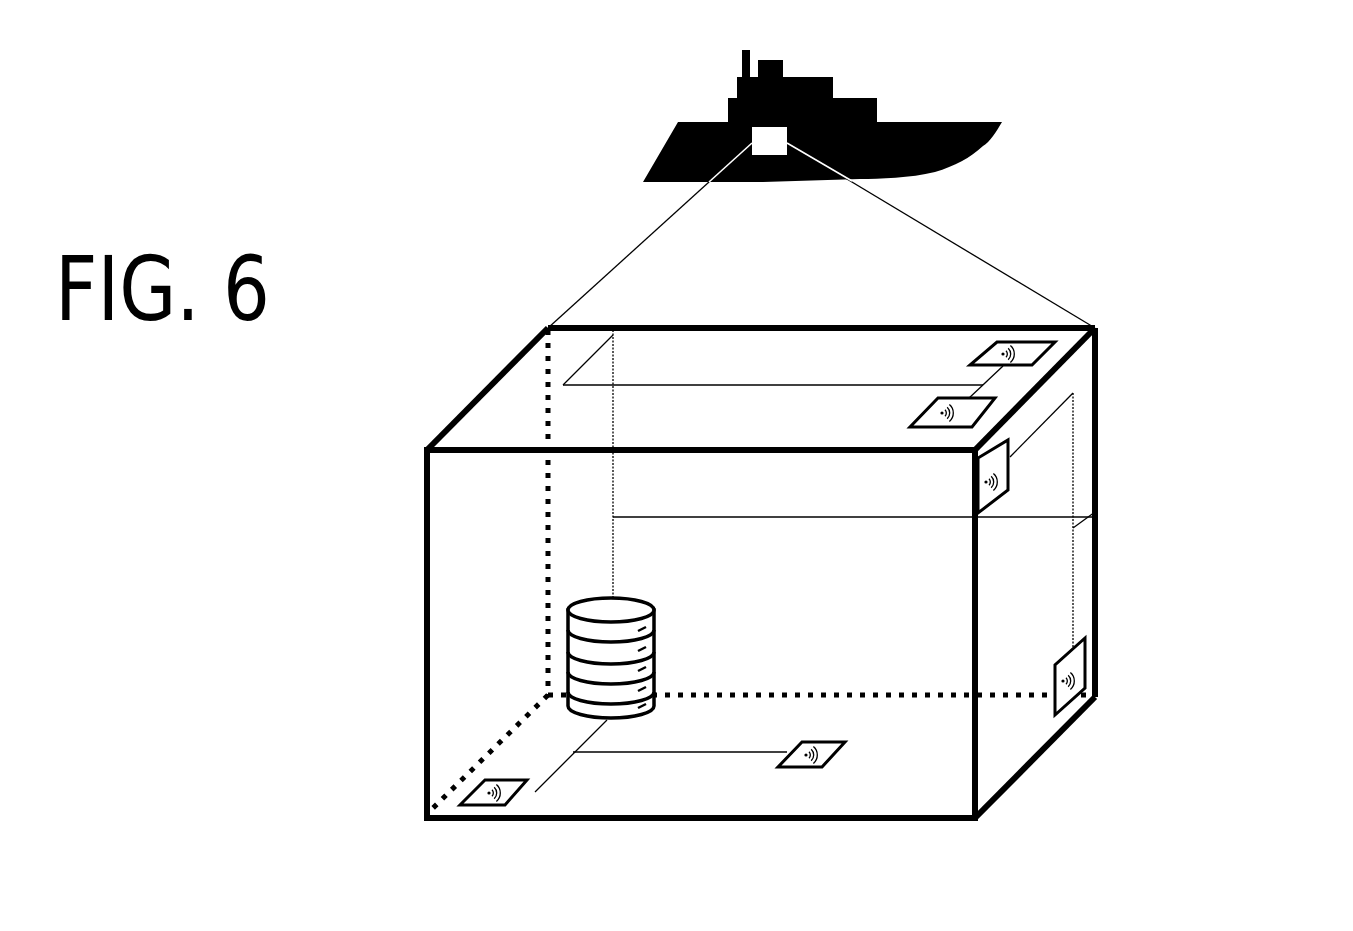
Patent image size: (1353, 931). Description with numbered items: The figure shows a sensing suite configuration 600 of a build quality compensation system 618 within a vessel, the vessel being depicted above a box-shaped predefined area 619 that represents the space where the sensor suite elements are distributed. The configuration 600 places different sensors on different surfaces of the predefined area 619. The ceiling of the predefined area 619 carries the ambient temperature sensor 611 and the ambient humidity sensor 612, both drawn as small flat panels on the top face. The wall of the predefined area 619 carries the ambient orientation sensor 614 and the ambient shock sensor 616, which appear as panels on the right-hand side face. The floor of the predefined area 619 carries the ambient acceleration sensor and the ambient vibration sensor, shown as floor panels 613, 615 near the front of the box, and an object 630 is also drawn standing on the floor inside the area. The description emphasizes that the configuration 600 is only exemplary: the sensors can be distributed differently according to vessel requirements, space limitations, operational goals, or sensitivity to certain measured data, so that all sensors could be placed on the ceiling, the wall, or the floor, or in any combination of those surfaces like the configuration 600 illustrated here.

The sensing suite configuration 600 is at (1347, 127).
The build quality compensation system 618 is at (771, 155).
The predefined area 619 is at (797, 544).
The cargo item / tracked asset 630 is at (657, 649).
The ambient temperature sensor 611 is at (910, 421).
The ambient humidity sensor 612 is at (972, 353).
The sensor node 613 is at (806, 776).
The ambient orientation sensor 614 is at (955, 476).
The sensor node 615 is at (532, 791).
The ambient shock sensor 616 is at (1041, 666).